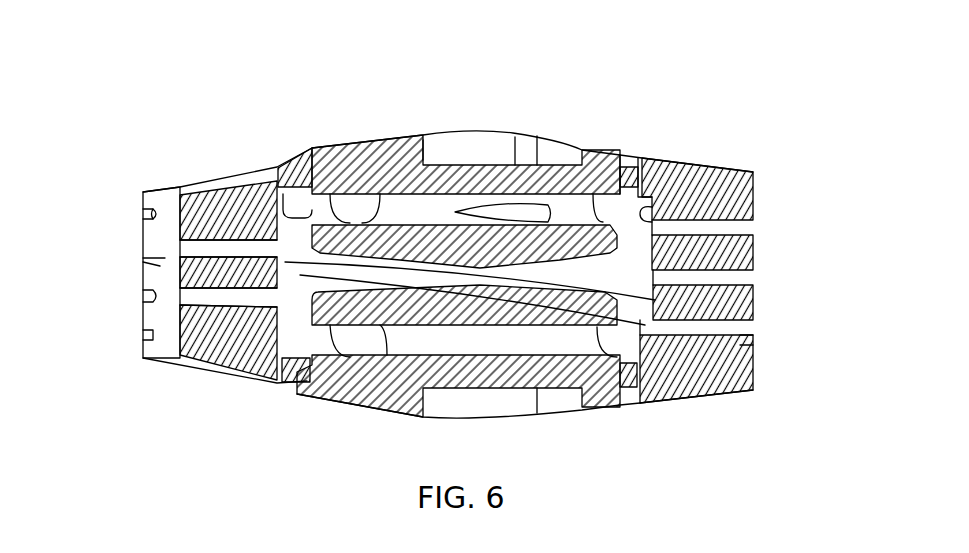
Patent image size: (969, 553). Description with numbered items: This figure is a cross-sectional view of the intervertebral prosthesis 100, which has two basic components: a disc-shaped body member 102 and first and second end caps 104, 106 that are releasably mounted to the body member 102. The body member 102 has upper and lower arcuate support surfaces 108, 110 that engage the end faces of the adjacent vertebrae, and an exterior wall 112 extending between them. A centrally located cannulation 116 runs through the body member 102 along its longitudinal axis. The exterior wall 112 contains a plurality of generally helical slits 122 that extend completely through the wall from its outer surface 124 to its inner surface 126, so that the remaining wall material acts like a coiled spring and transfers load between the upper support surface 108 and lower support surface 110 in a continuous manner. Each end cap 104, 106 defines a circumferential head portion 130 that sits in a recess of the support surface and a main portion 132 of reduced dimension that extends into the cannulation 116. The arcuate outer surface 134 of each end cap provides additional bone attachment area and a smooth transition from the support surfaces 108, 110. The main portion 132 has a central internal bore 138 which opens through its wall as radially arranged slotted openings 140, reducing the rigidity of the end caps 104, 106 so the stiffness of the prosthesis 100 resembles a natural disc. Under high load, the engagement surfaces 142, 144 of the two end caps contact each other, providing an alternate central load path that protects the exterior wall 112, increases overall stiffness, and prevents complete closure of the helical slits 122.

The intervertebral prosthesis 100 is at (690, 123).
The body member 102 is at (717, 190).
The first end cap 104 is at (360, 137).
The second end cap 106 is at (360, 407).
The first support surface 108 is at (653, 147).
The second support surface 110 is at (205, 392).
The exterior wall 112 is at (147, 335).
The cannulation 116 is at (270, 167).
The slits 122 is at (143, 258).
The outer surface 124 is at (153, 282).
The inner surface 126 is at (753, 340).
The head portion 130 is at (400, 133).
The main portion 132 is at (287, 400).
The outer surface 134 is at (383, 133).
The internal bore 138 is at (203, 180).
The slotted openings 140 is at (297, 163).
The engagement surface 142 is at (442, 130).
The engagement surface 144 is at (435, 275).